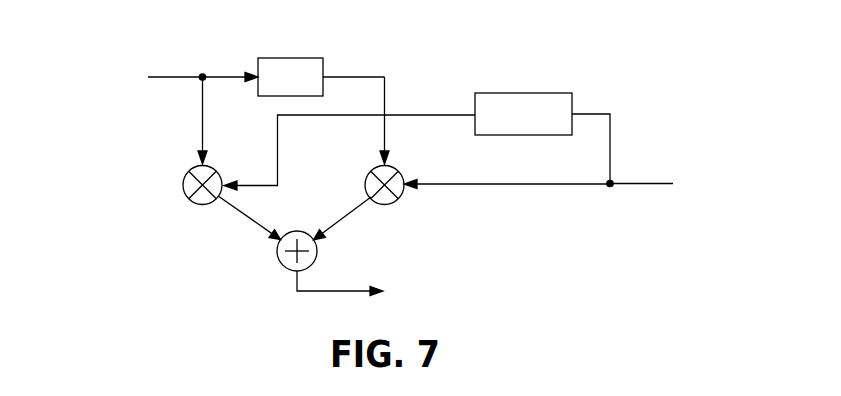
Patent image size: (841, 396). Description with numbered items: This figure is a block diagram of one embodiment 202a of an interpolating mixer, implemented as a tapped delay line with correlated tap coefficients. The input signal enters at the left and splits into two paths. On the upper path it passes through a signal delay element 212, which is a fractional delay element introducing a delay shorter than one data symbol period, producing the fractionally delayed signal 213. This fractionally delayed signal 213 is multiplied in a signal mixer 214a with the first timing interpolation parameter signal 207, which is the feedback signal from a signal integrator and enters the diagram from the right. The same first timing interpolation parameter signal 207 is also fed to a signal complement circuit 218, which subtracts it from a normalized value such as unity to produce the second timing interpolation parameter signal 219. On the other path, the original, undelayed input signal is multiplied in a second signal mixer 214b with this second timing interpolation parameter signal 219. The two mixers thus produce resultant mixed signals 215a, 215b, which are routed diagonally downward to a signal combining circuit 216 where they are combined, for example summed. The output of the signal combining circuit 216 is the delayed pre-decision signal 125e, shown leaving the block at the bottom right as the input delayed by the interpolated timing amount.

The interpolating mixer embodiment 202a is at (158, 254).
The signal delay element 212 is at (287, 55).
The fractionally delayed signal 213 is at (353, 77).
The second timing interpolation parameter signal 219 is at (428, 114).
The signal complement circuit 218 is at (527, 93).
The first timing interpolation parameter signal 207 is at (632, 182).
The signal mixer 214b is at (186, 181).
The signal mixer 214a is at (368, 179).
The mixed signal 215b is at (222, 213).
The mixed signal 215a is at (367, 208).
The signal combining circuit 216 is at (279, 254).
The delayed pre-decision signal 125e is at (297, 291).